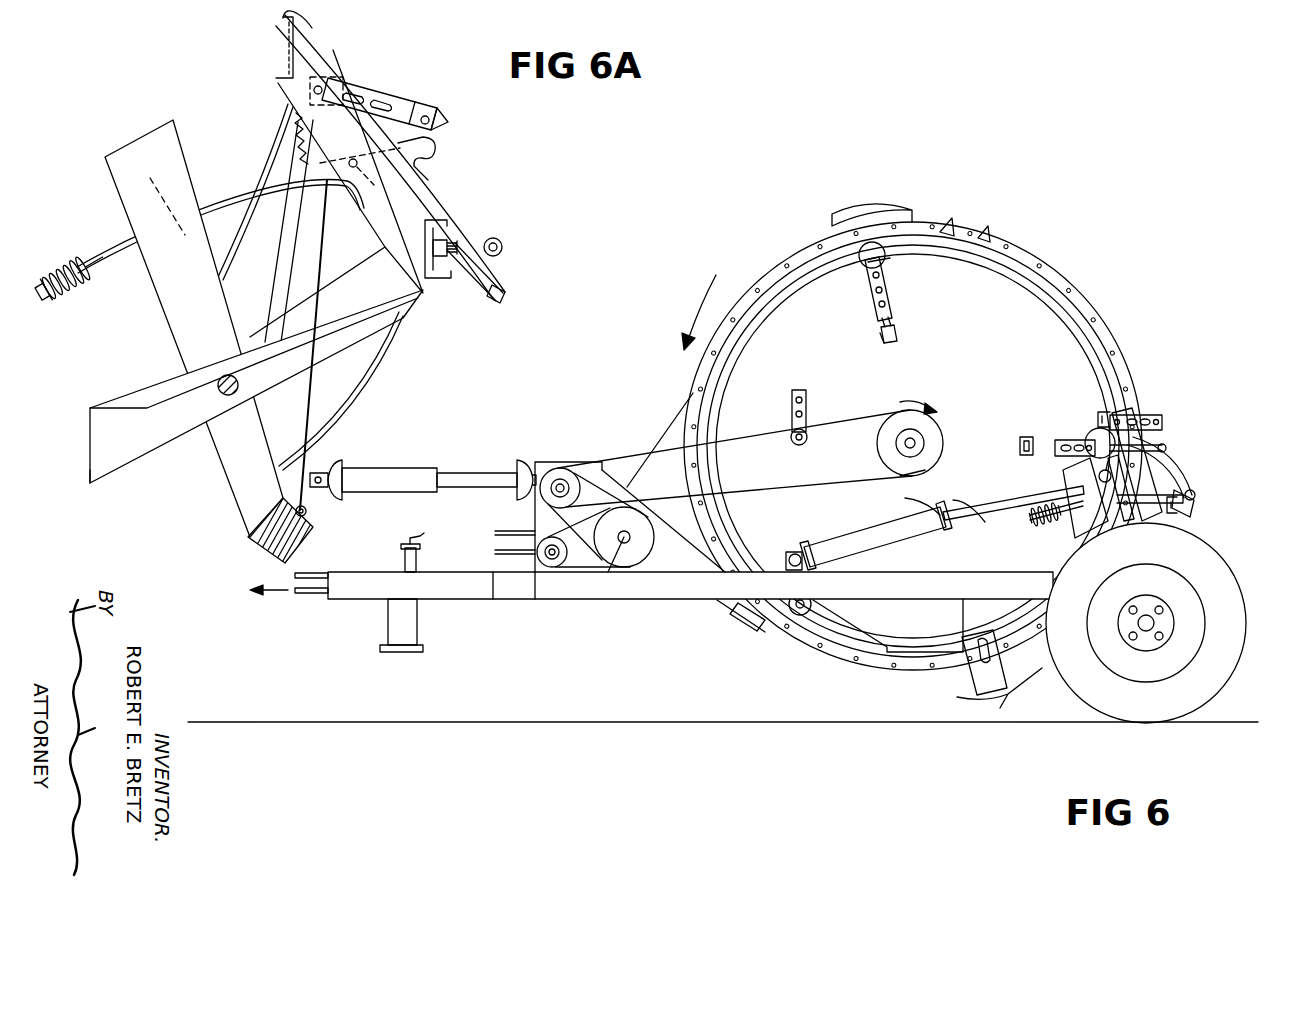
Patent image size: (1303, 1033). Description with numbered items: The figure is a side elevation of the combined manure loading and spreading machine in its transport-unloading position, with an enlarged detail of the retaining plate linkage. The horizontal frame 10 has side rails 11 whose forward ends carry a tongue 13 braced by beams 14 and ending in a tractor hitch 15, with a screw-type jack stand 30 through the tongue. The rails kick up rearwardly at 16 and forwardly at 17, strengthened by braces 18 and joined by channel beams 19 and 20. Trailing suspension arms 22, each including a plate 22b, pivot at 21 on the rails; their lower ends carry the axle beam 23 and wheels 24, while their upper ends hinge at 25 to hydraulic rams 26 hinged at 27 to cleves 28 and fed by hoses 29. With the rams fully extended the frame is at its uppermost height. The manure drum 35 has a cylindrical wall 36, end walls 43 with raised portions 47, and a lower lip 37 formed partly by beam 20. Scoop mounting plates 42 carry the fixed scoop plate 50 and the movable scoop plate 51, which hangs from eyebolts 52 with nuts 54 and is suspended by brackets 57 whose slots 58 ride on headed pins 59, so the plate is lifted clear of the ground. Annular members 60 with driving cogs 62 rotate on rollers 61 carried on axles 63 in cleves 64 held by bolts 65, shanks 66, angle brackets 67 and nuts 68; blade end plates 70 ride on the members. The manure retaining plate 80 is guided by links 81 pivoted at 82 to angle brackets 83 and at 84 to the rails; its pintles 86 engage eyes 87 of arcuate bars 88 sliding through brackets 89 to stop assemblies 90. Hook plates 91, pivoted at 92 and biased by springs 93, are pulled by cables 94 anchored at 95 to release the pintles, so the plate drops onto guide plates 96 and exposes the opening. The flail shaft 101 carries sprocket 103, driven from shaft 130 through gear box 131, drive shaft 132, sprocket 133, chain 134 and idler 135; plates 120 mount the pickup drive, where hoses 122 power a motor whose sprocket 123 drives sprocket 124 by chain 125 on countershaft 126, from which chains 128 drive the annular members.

In FIG. 6, the horizontal frame 10 is at (665, 598).
In FIG. 6A, the side rails 11 is at (118, 485).
In FIG. 6, the side rails 11 is at (570, 600).
In FIG. 6, the tongue 13 is at (350, 600).
In FIG. 6, the beams 14 is at (520, 600).
In FIG. 6, the tractor hitch 15 is at (306, 595).
In FIG. 6A, the kicked-up rail portions 16 is at (367, 337).
In FIG. 6, the kicked-up rail portions 16 is at (1158, 522).
In FIG. 6A, the forwardly kicked rail portions 17 is at (371, 225).
In FIG. 6, the forwardly kicked rail portions 17 is at (1152, 462).
In FIG. 6A, the braces 18 is at (276, 265).
In FIG. 6, the braces 18 is at (1128, 505).
In FIG. 6A, the channel beam 19 is at (437, 283).
In FIG. 6, the channel beam 19 is at (1180, 513).
In FIG. 6A, the channel beam 20 is at (277, 62).
In FIG. 6, the channel beam 20 is at (1097, 412).
In FIG. 6A, the pivot 21 is at (238, 378).
In FIG. 6, the trailing suspension arms 22 is at (1105, 529).
In FIG. 6A, the suspension arm plate 22b is at (168, 318).
In FIG. 6A, the axle beam 23 is at (250, 532).
In FIG. 6, the pneumatic tired wheels 24 is at (1232, 672).
In FIG. 6, the hinge 25 is at (1104, 483).
In FIG. 6, the hydraulic rams 26 is at (900, 544).
In FIG. 6, the hinge 27 is at (790, 550).
In FIG. 6, the cleves 28 is at (798, 567).
In FIG. 6, the hoses 29 is at (904, 500).
In FIG. 6, the screw-type jack stand 30 is at (418, 561).
In FIG. 6, the manure drum 35 is at (913, 439).
In FIG. 6, the cylindrical drum wall 36 is at (730, 368).
In FIG. 6A, the lower lip 37 is at (306, 30).
In FIG. 6, the scoop mounting plates 42 is at (962, 574).
In FIG. 6, the drum end walls 43 is at (768, 298).
In FIG. 6, the raised end wall portions 47 is at (1040, 266).
In FIG. 6A, the fixed scoop plate 50 is at (283, 126).
In FIG. 6A, the movable scoop plate 51 is at (362, 382).
In FIG. 6A, the eyebolts 52 is at (478, 273).
In FIG. 6A, the nuts 54 is at (449, 257).
In FIG. 6, the vertical brackets 57 is at (1003, 700).
In FIG. 6, the vertical slots 58 is at (1000, 665).
In FIG. 6, the headed pins 59 is at (978, 642).
In FIG. 6, the annular members 60 is at (812, 243).
In FIG. 6, the rollers 61 is at (860, 246).
In FIG. 6, the driving cogs 62 is at (985, 232).
In FIG. 6, the horizontal axle 63 is at (868, 272).
In FIG. 6, the cleves 64 is at (870, 300).
In FIG. 6, the headed bolts 65 is at (884, 284).
In FIG. 6, the threaded shank 66 is at (884, 340).
In FIG. 6, the angle bracket 67 is at (898, 330).
In FIG. 6, the nut 68 is at (896, 310).
In FIG. 6, the pickup blade end plates 70 is at (892, 208).
In FIG. 6A, the manure retaining plate 80 is at (476, 188).
In FIG. 6, the manure retaining plate 80 is at (1185, 475).
In FIG. 6A, the links 81 is at (402, 95).
In FIG. 6, the links 81 is at (1152, 416).
In FIG. 6A, the pivot 82 is at (433, 113).
In FIG. 6A, the angle brackets 83 is at (450, 122).
In FIG. 6A, the pivot 84 is at (309, 92).
In FIG. 6A, the pintles 86 is at (499, 241).
In FIG. 6, the pintles 86 is at (1190, 495).
In FIG. 6A, the eyes 87 is at (503, 249).
In FIG. 6A, the arcuate bars 88 is at (101, 252).
In FIG. 6, the arcuate bars 88 is at (1068, 521).
In FIG. 6A, the brackets 89 is at (156, 184).
In FIG. 6A, the spring cushioned stop assemblies 90 is at (80, 298).
In FIG. 6, the spring cushioned stop assemblies 90 is at (1038, 523).
In FIG. 6A, the hook plates 91 is at (438, 153).
In FIG. 6, the hook plates 91 is at (1163, 443).
In FIG. 6A, the pivot 92 is at (362, 171).
In FIG. 6A, the extensible coil springs 93 is at (293, 137).
In FIG. 6A, the cables 94 is at (313, 410).
In FIG. 6A, the cable anchorage 95 is at (308, 514).
In FIG. 6A, the guide plates 96 is at (508, 294).
In FIG. 6, the guide plates 96 is at (1196, 504).
In FIG. 6, the flail shaft 101 is at (915, 442).
In FIG. 6, the drive sprocket 103 is at (938, 464).
In FIG. 6, the vertical plates 120 is at (655, 548).
In FIG. 6, the hoses 122 is at (496, 532).
In FIG. 6, the drive sprocket 123 is at (537, 553).
In FIG. 6, the larger sprocket 124 is at (616, 566).
In FIG. 6, the drive chain 125 is at (547, 535).
In FIG. 6, the transverse countershaft 126 is at (630, 550).
In FIG. 6, the drive chains 128 is at (690, 404).
In FIG. 6, the shaft 130 is at (400, 468).
In FIG. 6, the gear box 131 is at (540, 462).
In FIG. 6, the drive shaft 132 is at (560, 466).
In FIG. 6, the drive sprocket 133 is at (577, 472).
In FIG. 6, the drive chain 134 is at (618, 455).
In FIG. 6, the adjustable idler sprocket 135 is at (808, 400).